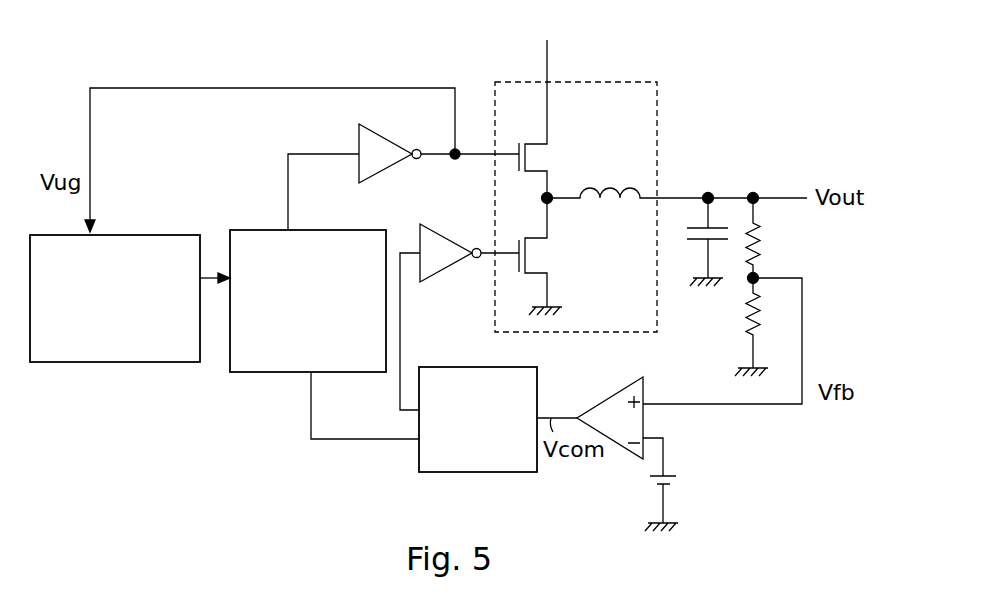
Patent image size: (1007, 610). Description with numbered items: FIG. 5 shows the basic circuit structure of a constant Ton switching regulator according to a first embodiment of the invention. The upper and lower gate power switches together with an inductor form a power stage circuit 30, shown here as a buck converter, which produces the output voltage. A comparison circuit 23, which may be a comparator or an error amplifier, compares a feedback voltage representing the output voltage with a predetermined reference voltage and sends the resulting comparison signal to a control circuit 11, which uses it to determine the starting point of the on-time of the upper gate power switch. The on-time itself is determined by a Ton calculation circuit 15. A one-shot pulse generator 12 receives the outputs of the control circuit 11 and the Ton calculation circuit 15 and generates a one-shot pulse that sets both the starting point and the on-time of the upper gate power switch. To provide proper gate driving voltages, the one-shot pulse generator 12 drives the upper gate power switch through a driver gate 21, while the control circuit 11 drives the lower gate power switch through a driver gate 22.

The control circuit 11 is at (478, 419).
The one-shot pulse generator 12 is at (308, 301).
The Ton calculation circuit 15 is at (115, 298).
The driver gate 21 is at (373, 124).
The driver gate 22 is at (431, 224).
The comparison circuit 23 is at (624, 386).
The power stage circuit 30 is at (576, 173).